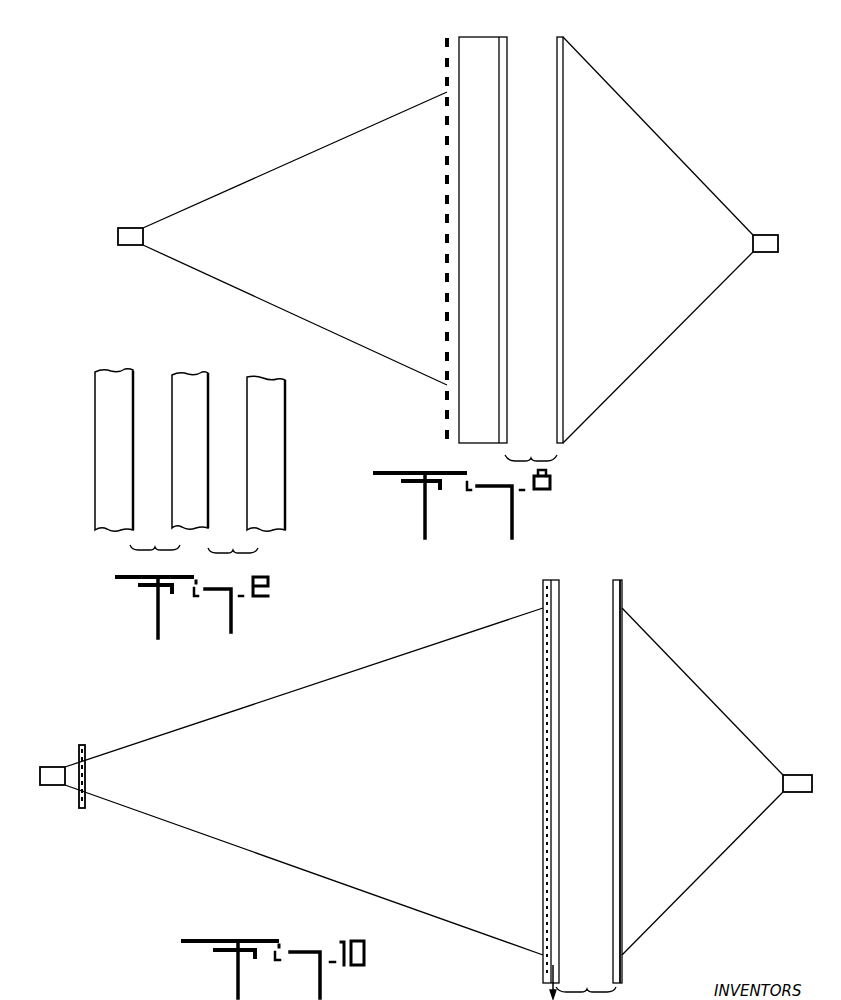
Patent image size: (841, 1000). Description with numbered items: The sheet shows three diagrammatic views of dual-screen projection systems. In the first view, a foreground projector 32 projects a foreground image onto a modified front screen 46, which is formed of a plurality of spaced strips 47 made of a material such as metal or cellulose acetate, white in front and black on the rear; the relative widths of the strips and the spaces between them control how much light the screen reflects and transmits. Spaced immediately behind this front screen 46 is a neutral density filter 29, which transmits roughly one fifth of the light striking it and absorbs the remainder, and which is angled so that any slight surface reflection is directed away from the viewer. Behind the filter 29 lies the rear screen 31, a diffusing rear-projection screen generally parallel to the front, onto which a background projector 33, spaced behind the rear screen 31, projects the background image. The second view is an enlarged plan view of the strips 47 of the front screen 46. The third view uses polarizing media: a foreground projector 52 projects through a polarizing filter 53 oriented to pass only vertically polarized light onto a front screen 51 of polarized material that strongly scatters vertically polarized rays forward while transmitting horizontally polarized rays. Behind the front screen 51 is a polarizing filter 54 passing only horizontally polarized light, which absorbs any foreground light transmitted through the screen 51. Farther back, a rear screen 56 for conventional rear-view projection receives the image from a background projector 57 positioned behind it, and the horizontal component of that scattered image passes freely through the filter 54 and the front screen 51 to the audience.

In FIG. 8, the neutral density filter 29 is at (478, 46).
In FIG. 8, the rear screen 31 is at (557, 75).
In FIG. 8, the foreground projector 32 is at (136, 232).
In FIG. 8, the background projector 33 is at (764, 237).
In FIG. 8, the front screen 46 is at (445, 65).
In FIG. 9, the strips 47 is at (179, 455).
In FIG. 10, the front screen 51 is at (543, 781).
In FIG. 10, the foreground projector 52 is at (39, 769).
In FIG. 10, the polarizing filter 53 is at (89, 744).
In FIG. 10, the polarizing filter 54 is at (556, 781).
In FIG. 10, the rear screen 56 is at (622, 781).
In FIG. 10, the background projector 57 is at (792, 764).